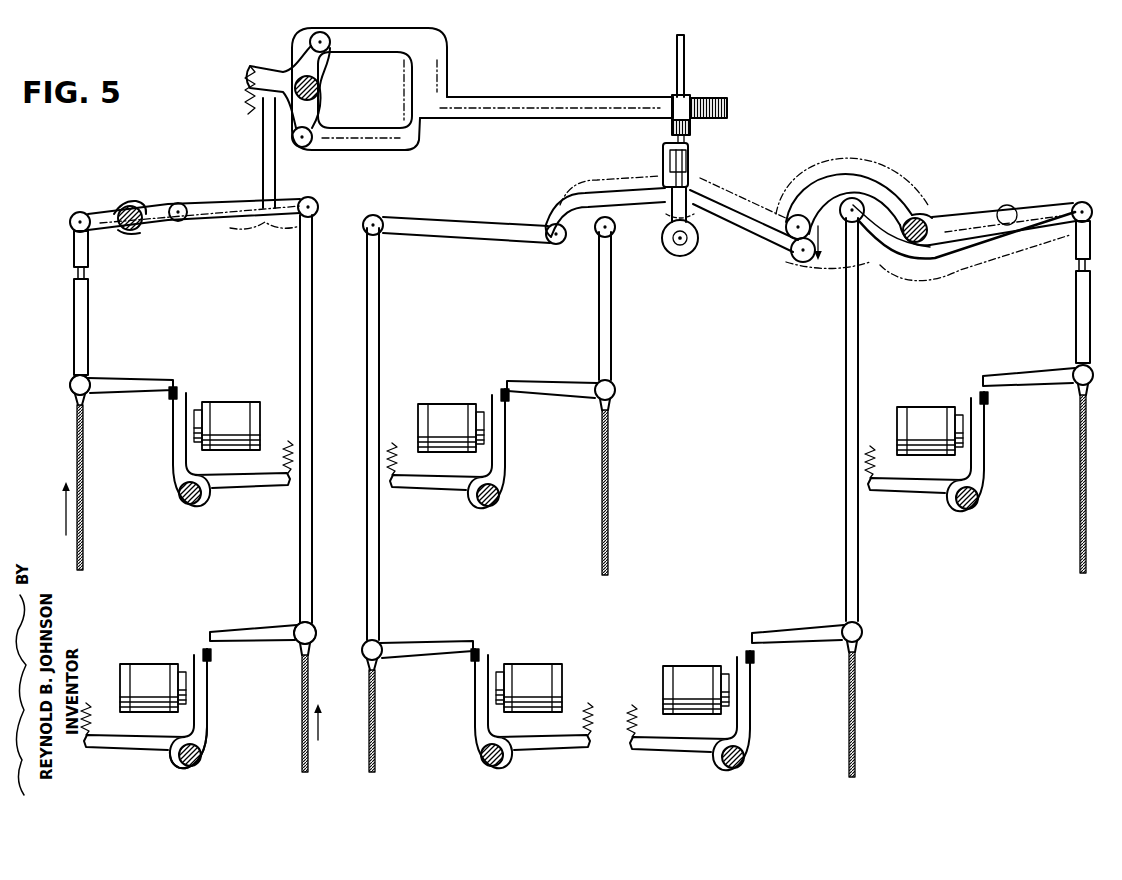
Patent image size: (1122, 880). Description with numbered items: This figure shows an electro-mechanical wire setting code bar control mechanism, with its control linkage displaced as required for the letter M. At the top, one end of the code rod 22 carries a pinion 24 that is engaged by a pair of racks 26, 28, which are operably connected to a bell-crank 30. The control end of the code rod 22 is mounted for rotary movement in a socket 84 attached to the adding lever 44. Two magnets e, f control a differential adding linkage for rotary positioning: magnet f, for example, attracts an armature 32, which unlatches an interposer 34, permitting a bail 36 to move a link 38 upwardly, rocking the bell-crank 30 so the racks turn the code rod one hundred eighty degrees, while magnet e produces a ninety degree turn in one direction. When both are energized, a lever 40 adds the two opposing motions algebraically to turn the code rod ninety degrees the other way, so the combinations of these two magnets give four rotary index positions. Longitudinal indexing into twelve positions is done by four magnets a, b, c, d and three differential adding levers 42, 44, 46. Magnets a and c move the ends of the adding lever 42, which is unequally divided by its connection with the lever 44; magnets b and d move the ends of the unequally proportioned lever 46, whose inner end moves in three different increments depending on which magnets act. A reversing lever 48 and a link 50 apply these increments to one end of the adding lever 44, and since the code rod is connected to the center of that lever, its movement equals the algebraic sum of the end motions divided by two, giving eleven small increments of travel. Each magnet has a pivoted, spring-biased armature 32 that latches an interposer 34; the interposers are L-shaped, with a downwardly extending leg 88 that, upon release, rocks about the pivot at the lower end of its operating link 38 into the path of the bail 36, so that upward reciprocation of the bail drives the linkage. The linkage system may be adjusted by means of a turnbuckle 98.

The code rod 22 is at (686, 45).
The pinion 24 is at (692, 128).
The rack 26 is at (415, 134).
The rack 28 is at (372, 36).
The bell-crank 30 is at (293, 60).
The armature 32 is at (200, 708).
The interposer 34 is at (110, 380).
The bail 36 is at (84, 492).
The link 38 is at (300, 536).
The lever 40 is at (202, 215).
The adding lever 42 is at (455, 216).
The adding lever 44 is at (732, 230).
The lever 46 is at (1022, 208).
The reversing lever 48 is at (893, 206).
The link 50 is at (812, 258).
The socket 84 is at (663, 160).
The leg 88 is at (92, 398).
The turnbuckle 98 is at (74, 308).
The magnet a is at (540, 668).
The magnet b is at (686, 668).
The magnet c is at (456, 404).
The magnet d is at (912, 406).
The magnet e is at (216, 402).
The magnet f is at (164, 666).